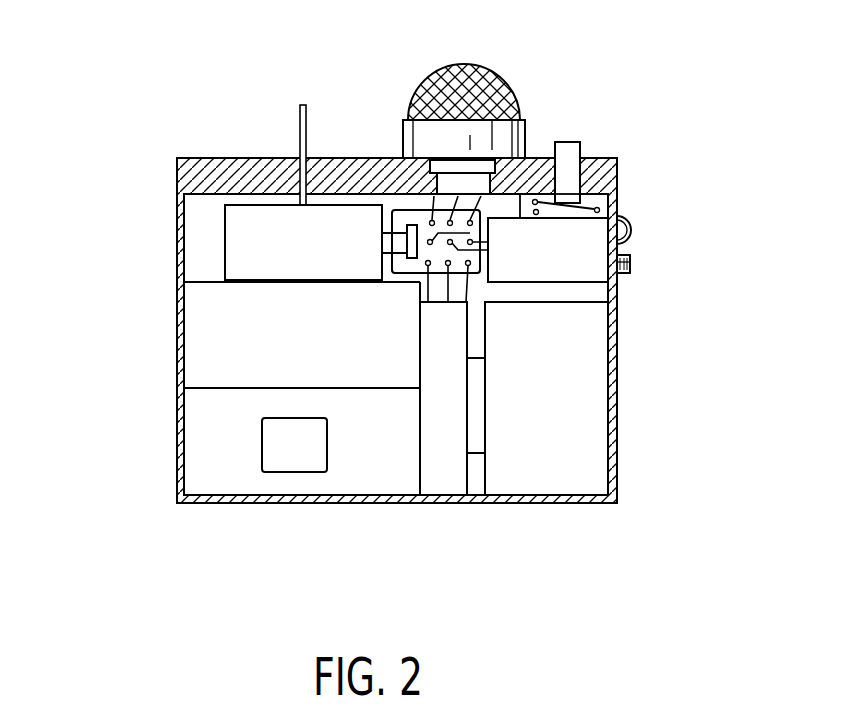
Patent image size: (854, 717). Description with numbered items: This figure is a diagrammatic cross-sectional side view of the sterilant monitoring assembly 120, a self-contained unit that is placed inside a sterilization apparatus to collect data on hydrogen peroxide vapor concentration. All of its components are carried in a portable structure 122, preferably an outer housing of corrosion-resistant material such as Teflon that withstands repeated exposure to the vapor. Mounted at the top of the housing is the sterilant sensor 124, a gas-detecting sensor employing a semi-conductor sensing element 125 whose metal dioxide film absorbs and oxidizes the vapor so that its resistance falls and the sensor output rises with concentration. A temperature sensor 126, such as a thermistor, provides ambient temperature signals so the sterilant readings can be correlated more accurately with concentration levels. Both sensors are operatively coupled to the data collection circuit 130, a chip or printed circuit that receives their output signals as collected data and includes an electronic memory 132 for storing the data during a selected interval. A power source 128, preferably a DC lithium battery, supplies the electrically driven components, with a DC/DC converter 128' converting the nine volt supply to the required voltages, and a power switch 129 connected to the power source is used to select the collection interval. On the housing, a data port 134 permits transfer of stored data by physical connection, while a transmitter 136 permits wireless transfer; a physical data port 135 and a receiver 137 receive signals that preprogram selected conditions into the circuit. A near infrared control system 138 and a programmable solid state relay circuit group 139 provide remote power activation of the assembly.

The sterilant monitoring assembly 120 is at (655, 131).
The portable structure 122 is at (200, 505).
The sterilant sensor 124 is at (425, 82).
The semi-conductor sensing element 125 is at (442, 166).
The temperature sensor 126 is at (297, 122).
The power source 128 is at (588, 356).
The DC/DC converter 128' is at (461, 438).
The power switch 129 is at (565, 148).
The data collection circuit 130 is at (413, 215).
The electronic memory 132 is at (220, 333).
The data port 134 is at (630, 265).
The physical data port 135 is at (682, 301).
The transmitter 136 is at (630, 235).
The receiver 137 is at (682, 216).
The near infrared control system 138 is at (297, 460).
The programmable solid state relay circuit group 139 is at (362, 470).